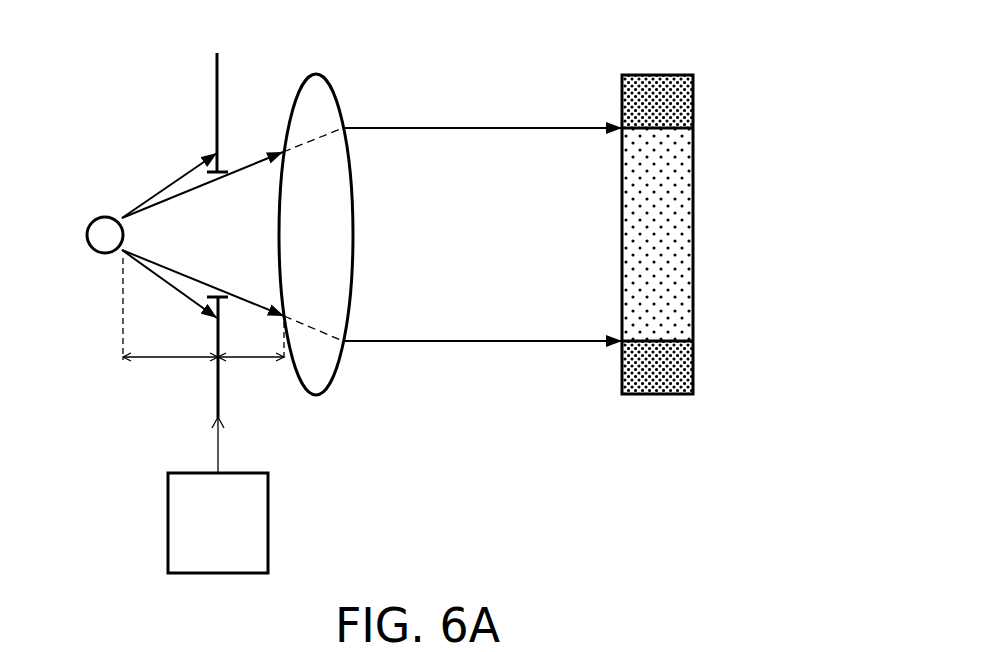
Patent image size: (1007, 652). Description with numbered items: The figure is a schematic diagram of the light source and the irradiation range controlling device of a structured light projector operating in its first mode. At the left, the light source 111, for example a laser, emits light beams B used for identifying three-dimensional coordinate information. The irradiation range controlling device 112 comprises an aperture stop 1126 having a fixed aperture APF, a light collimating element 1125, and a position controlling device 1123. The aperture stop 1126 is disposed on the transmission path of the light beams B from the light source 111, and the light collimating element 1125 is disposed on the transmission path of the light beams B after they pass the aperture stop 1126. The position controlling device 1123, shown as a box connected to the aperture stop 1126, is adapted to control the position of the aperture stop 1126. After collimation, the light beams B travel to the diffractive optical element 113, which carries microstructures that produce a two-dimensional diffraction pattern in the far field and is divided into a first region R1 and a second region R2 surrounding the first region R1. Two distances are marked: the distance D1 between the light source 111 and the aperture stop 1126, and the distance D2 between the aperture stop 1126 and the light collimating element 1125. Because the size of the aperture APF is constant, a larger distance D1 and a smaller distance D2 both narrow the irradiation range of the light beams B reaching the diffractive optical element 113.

The light source 111 is at (99, 227).
The irradiation range controlling device 112 is at (318, 313).
The diffractive optical element 113 is at (656, 75).
The position controlling device 1123 is at (268, 523).
The light collimating element 1125 is at (328, 388).
The aperture stop 1126 is at (219, 393).
The light beam B is at (162, 186).
The fixed aperture APF is at (222, 238).
The first region R1 is at (674, 243).
The second region R2 is at (674, 108).
The distance between the light source and the aperture stop D1 is at (170, 325).
The distance between the aperture stop and the light collimating element D2 is at (251, 357).